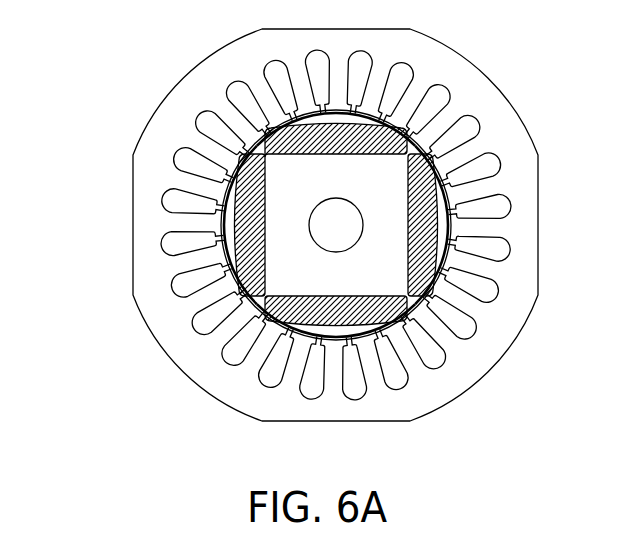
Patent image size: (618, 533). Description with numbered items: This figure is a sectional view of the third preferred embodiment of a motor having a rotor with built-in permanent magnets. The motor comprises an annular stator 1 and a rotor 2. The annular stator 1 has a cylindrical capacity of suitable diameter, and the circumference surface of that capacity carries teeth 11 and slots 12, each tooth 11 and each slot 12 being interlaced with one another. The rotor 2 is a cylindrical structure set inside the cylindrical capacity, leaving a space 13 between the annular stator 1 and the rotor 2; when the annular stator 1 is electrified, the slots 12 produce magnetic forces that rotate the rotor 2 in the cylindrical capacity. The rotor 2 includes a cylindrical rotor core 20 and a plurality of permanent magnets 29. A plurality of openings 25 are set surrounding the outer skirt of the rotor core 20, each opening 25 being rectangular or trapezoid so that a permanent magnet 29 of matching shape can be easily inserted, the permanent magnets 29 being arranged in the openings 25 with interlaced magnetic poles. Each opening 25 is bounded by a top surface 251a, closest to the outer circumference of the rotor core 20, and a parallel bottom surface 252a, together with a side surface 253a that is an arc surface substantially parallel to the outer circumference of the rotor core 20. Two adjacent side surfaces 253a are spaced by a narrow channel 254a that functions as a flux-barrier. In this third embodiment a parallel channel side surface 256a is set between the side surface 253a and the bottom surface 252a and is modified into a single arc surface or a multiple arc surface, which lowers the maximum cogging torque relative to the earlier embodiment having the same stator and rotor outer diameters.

The annular stator 1 is at (493, 103).
The tooth 11 is at (465, 155).
The slot 12 is at (495, 164).
The space 13 is at (413, 320).
The rotor 2 is at (332, 343).
The rotor core 20 is at (226, 223).
The opening 25 is at (424, 92).
The permanent magnet 29 is at (433, 228).
The top surface 251a is at (241, 247).
The bottom surface 252a is at (242, 203).
The side surface 253a is at (237, 293).
The channel 254a is at (262, 316).
The parallel channel side surface 256a is at (283, 328).